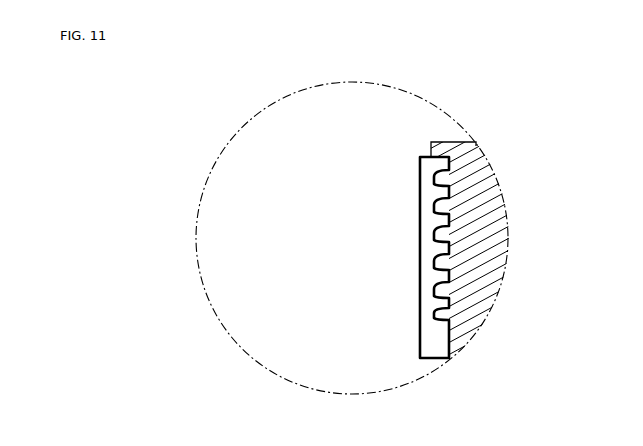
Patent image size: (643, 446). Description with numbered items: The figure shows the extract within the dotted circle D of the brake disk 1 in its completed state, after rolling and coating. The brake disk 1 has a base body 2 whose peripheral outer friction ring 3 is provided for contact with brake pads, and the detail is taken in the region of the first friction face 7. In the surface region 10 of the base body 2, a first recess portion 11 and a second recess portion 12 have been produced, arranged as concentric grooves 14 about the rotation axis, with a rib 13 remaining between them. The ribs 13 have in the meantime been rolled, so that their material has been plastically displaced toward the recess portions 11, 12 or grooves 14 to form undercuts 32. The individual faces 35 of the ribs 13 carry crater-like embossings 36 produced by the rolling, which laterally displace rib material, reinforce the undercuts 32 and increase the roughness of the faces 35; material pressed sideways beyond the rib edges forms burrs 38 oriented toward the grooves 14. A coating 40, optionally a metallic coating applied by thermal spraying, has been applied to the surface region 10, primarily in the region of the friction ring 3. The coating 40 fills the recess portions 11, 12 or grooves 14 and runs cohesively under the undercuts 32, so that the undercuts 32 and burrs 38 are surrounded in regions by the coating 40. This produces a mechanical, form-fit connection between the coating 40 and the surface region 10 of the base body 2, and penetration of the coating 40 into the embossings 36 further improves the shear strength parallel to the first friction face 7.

The circle D is at (249, 114).
The brake disk 1 is at (552, 125).
The base body 2 is at (491, 163).
The friction ring 3 is at (499, 186).
The first friction face 7 is at (357, 311).
The surface region 10 is at (314, 222).
The first recess portion 11 is at (452, 226).
The second recess portion 12 is at (445, 247).
The rib 13 is at (447, 248).
The groove 14 is at (427, 194).
The undercut 32 is at (447, 263).
The face 35 is at (427, 310).
The embossing 36 is at (427, 178).
The burr 38 is at (420, 241).
The coating 40 is at (420, 209).